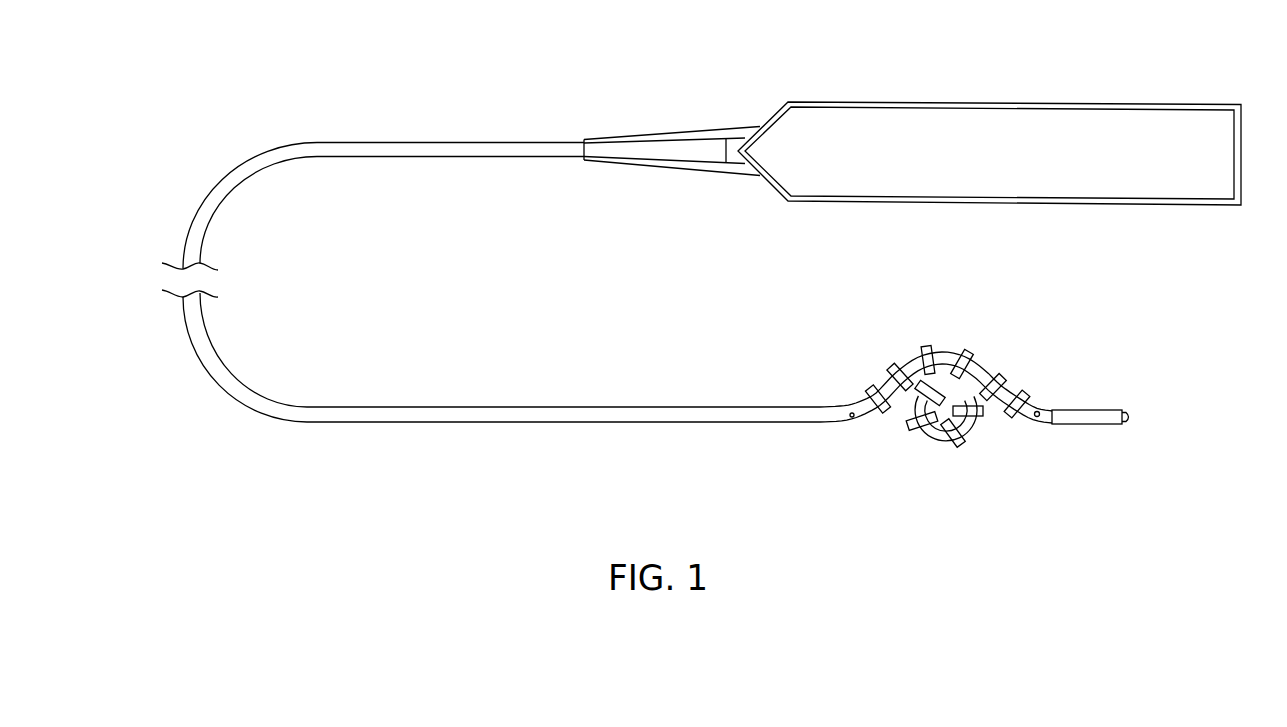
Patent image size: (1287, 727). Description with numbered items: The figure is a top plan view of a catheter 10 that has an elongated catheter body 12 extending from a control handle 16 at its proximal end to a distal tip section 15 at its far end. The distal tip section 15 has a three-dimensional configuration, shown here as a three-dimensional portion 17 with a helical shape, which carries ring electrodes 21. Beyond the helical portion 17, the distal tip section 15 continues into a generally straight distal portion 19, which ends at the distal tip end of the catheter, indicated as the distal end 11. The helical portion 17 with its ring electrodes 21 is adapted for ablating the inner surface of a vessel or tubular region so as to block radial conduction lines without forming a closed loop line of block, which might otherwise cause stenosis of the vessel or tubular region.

The catheter 10 is at (842, 51).
The distal end 11 is at (1131, 418).
The elongated catheter body 12 is at (420, 142).
The distal tip section 15 is at (1108, 478).
The control handle 16 is at (1010, 102).
The 3-D portion 17 is at (947, 352).
The generally straight distal portion 19 is at (1087, 410).
The ring electrodes 21 is at (848, 362).